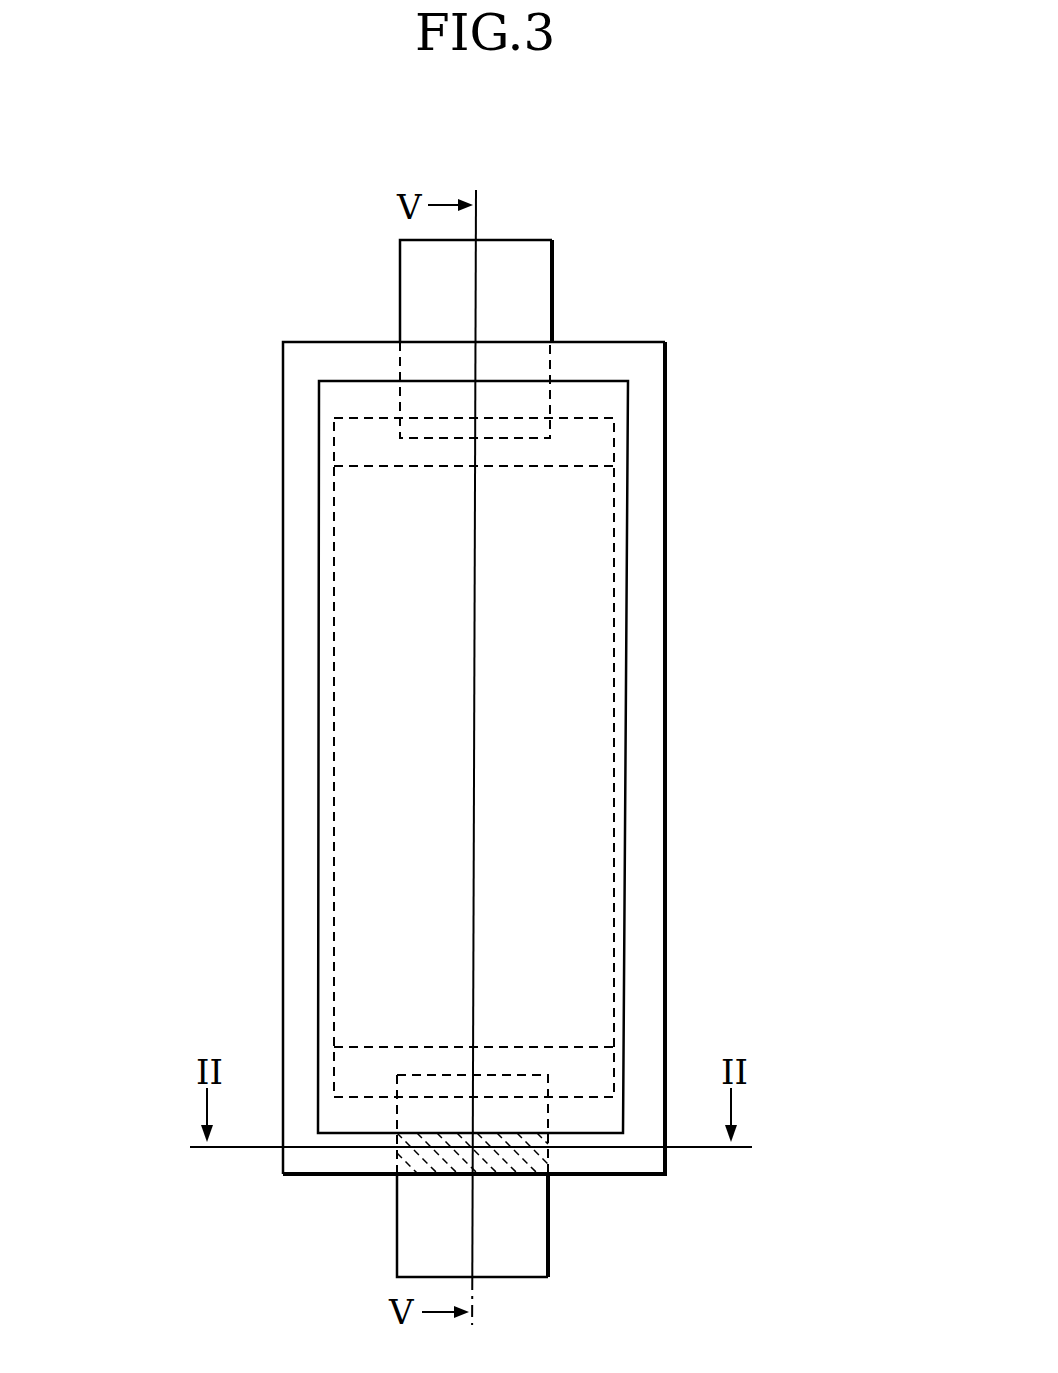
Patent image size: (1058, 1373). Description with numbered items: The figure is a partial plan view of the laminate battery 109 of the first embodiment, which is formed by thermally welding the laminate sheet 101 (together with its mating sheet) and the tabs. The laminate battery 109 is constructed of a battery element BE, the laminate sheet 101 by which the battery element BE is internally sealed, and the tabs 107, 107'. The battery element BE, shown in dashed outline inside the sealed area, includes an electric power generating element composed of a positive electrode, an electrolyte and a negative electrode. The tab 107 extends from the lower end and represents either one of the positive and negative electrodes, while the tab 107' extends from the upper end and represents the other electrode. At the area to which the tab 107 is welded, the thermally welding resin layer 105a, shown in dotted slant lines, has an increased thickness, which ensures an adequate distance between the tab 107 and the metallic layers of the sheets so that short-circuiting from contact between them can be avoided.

The laminate sheet 101 is at (642, 630).
The laminate battery 109 is at (640, 282).
The battery element BE is at (352, 712).
The tab 107' is at (414, 339).
The tab 107 is at (419, 1176).
The thermally welding resin layer 105a is at (547, 1163).